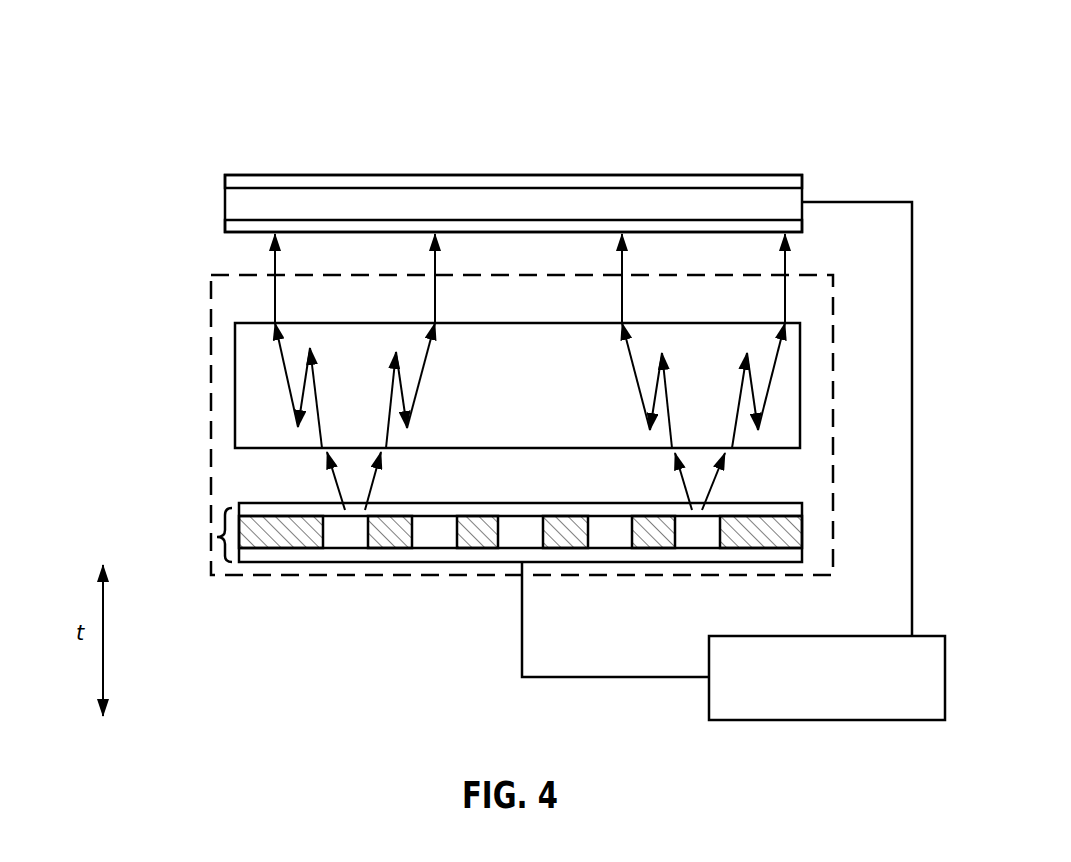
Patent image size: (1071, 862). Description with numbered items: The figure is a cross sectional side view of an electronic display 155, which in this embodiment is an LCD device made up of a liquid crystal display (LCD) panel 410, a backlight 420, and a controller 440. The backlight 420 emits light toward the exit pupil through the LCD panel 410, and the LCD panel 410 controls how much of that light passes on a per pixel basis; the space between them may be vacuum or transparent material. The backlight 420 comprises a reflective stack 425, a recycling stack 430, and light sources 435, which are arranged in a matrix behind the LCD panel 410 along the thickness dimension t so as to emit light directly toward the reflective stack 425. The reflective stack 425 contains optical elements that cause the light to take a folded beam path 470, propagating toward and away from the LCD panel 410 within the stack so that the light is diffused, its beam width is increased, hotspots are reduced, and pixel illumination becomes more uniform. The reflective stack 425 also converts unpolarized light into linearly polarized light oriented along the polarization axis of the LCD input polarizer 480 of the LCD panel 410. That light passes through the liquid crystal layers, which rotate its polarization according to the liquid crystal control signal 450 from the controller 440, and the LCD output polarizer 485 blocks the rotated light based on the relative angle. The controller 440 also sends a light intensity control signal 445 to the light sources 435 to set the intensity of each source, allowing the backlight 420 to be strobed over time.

The electronic display 155 is at (475, 93).
The liquid crystal display (LCD) panel 410 is at (225, 192).
The backlight 420 is at (211, 308).
The reflective stack 425 is at (235, 422).
The recycling stack 430 is at (217, 537).
The light sources 435 is at (428, 545).
The controller 440 is at (902, 688).
The light intensity control signal 445 is at (522, 653).
The liquid crystal control signal 450 is at (845, 203).
The folded beam path 470 is at (785, 262).
The LCD input polarizer 480 is at (225, 228).
The LCD output polarizer 485 is at (340, 177).